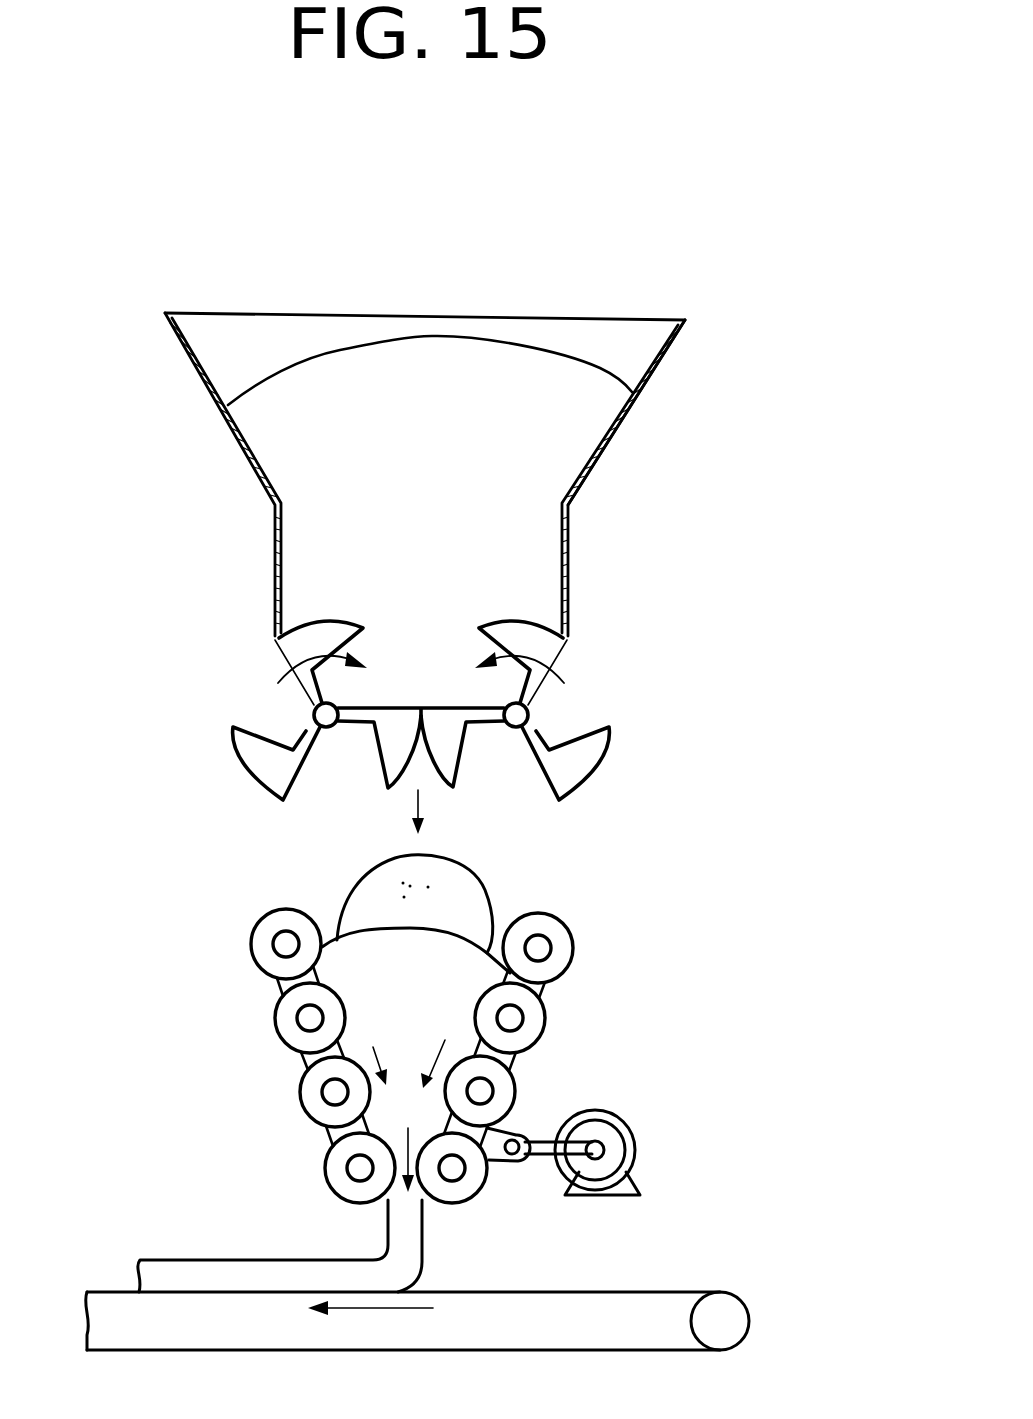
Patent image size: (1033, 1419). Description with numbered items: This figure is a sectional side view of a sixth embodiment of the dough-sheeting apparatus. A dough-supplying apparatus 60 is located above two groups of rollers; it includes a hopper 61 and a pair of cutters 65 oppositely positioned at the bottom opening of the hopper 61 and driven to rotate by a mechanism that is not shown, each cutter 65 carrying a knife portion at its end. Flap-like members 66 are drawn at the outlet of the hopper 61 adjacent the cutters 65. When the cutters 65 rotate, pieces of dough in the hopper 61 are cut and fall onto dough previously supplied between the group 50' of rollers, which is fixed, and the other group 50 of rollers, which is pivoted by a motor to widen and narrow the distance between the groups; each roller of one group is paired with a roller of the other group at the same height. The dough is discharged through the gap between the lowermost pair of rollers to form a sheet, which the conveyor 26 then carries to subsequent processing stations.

The conveyor 26 is at (617, 1293).
The group of rollers 50 is at (547, 1052).
The group of rollers 50' is at (279, 1056).
The dough-supplying apparatus 60 is at (615, 507).
The hopper 61 is at (655, 367).
The cutters 65 is at (266, 763).
The flap 66 is at (359, 628).